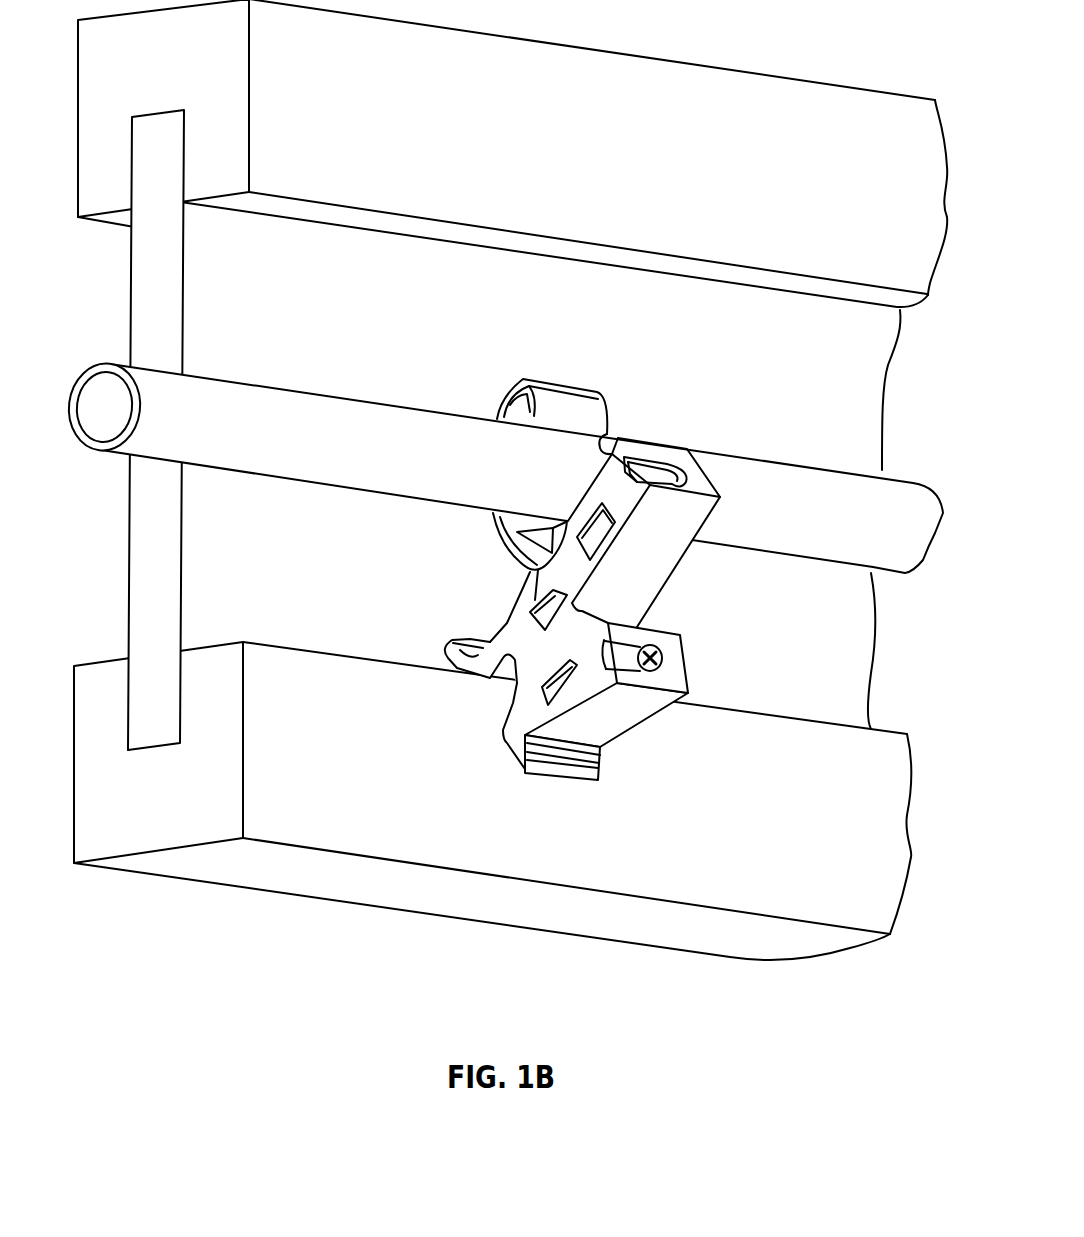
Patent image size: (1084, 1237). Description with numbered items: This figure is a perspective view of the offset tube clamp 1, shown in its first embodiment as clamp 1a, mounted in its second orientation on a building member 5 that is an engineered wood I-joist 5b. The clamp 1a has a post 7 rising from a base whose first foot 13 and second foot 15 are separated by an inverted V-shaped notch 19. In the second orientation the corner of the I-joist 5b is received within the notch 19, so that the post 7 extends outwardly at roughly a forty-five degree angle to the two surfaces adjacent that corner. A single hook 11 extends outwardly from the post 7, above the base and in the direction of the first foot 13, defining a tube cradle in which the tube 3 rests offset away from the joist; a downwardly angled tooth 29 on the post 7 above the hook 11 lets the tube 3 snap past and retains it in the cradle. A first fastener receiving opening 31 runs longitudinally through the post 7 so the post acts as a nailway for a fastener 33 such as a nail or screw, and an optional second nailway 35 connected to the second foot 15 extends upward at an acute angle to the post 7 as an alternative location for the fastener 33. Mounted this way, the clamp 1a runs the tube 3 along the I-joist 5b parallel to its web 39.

The offset tube clamp 1 is at (566, 577).
The clamp 1a is at (510, 600).
The tube 3 is at (318, 392).
The building member 5 is at (750, 70).
The engineered wood I-joist 5b is at (559, 34).
The post 7 is at (677, 578).
The hook 11 is at (487, 520).
The first foot 13 is at (440, 651).
The second foot 15 is at (567, 772).
The notch 19 is at (508, 692).
The tooth 29 is at (613, 430).
The first fastener receiving opening 31 is at (683, 452).
The fastener 33 is at (667, 663).
The second nailway 35 is at (637, 727).
The web 39 is at (113, 299).